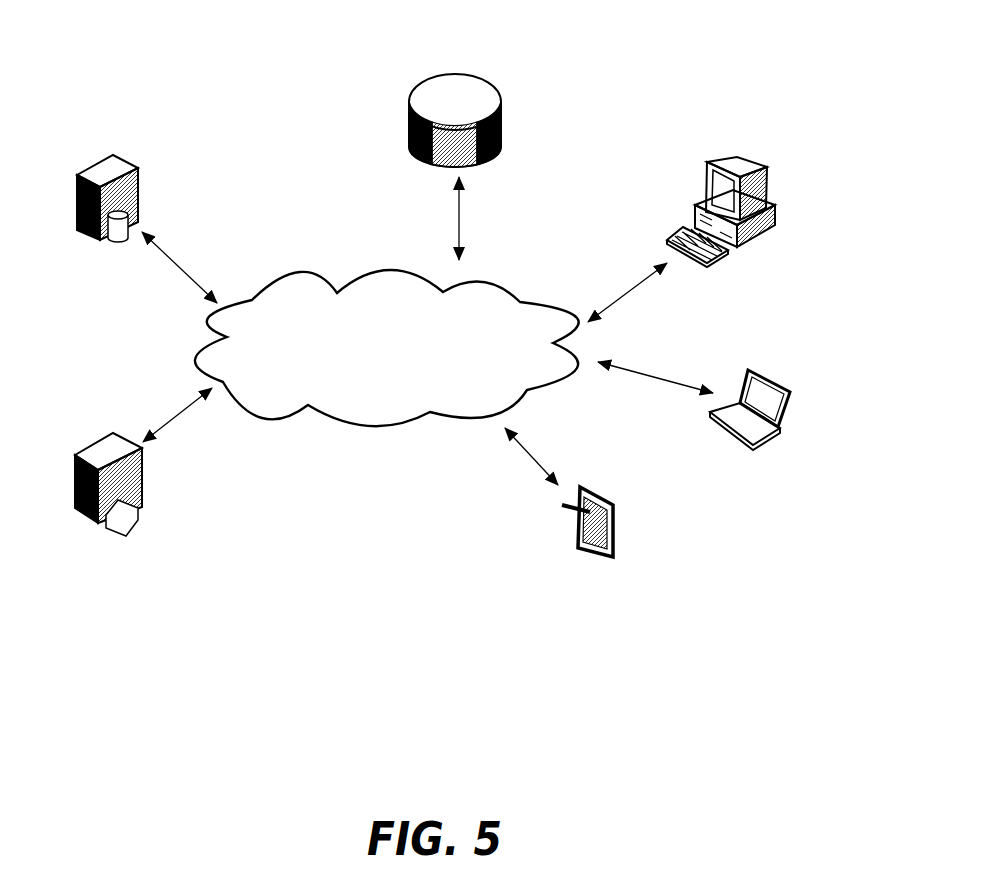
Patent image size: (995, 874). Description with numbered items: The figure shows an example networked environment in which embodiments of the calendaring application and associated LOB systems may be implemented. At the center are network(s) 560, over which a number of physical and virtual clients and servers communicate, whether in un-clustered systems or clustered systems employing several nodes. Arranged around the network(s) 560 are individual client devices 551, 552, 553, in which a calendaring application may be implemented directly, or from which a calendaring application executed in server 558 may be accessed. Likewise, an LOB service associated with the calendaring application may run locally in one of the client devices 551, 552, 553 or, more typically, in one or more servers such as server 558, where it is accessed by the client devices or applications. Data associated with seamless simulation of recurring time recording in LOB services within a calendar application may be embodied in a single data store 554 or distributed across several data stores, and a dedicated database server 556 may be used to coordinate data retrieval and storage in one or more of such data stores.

The client device 551 is at (762, 152).
The client device 552 is at (790, 370).
The client device 553 is at (607, 485).
The data store 554 is at (472, 52).
The database server 556 is at (118, 243).
The server 558 is at (110, 540).
The network(s) 560 is at (302, 263).